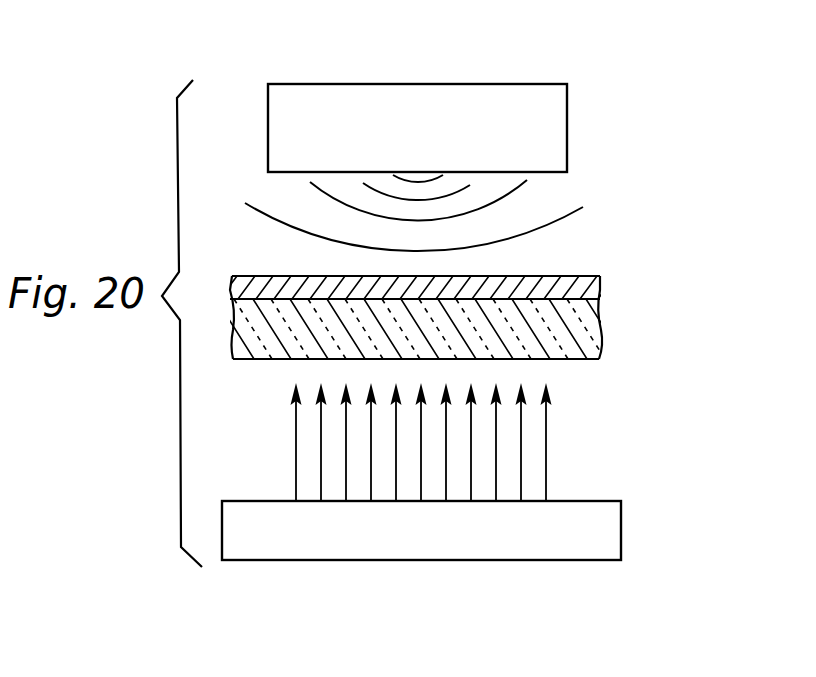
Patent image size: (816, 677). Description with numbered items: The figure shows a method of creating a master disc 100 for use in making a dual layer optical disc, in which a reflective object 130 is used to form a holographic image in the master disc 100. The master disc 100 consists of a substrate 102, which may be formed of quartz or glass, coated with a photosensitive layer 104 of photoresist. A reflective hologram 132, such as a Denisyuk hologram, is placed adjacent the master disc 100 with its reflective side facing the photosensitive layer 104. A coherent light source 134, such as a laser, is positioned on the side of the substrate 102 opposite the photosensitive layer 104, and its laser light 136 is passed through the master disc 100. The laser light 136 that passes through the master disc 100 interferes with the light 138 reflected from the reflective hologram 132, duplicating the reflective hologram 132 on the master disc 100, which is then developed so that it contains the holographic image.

The reflective object 130 is at (600, 83).
The reflective hologram 132 is at (568, 117).
The light reflected from the hologram 138 is at (578, 210).
The master disc 100 is at (660, 314).
The photosensitive layer 104 is at (604, 281).
The substrate 102 is at (594, 337).
The laser light 136 is at (520, 442).
The coherent light source 134 is at (621, 543).